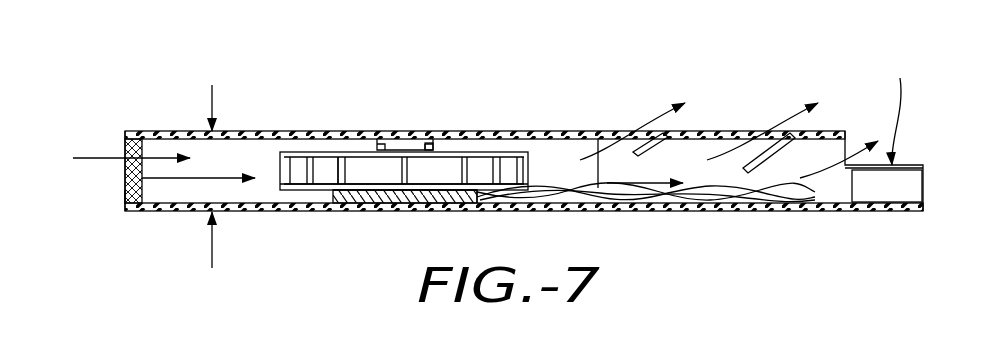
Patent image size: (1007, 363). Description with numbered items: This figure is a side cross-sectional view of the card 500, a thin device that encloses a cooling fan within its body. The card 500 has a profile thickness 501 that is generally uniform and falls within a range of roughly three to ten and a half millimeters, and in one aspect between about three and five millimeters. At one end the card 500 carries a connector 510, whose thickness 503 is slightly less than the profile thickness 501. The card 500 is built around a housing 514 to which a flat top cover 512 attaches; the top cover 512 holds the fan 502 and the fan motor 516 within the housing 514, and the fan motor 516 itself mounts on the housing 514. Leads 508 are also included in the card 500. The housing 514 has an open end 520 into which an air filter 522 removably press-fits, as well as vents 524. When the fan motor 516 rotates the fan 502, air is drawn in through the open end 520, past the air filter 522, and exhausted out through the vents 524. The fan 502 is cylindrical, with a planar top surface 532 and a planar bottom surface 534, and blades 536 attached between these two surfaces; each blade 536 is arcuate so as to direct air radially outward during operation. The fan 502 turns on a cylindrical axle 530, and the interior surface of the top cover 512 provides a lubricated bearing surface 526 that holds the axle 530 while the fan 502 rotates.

The card 500 is at (613, 62).
The profile thickness 501 is at (210, 95).
The fan 502 is at (505, 152).
The thickness 503 is at (904, 109).
The leads 508 is at (757, 197).
The connector 510 is at (907, 165).
The top cover 512 is at (567, 137).
The housing 514 is at (515, 205).
The fan motor 516 is at (405, 203).
The open end 520 is at (117, 138).
The air filter 522 is at (122, 193).
The vents 524 is at (755, 133).
The lubricated bearing surface 526 is at (430, 139).
The cylindrical axle 530 is at (405, 139).
The planar top surface 532 is at (302, 152).
The planar bottom surface 534 is at (300, 205).
The blades 536 is at (348, 167).